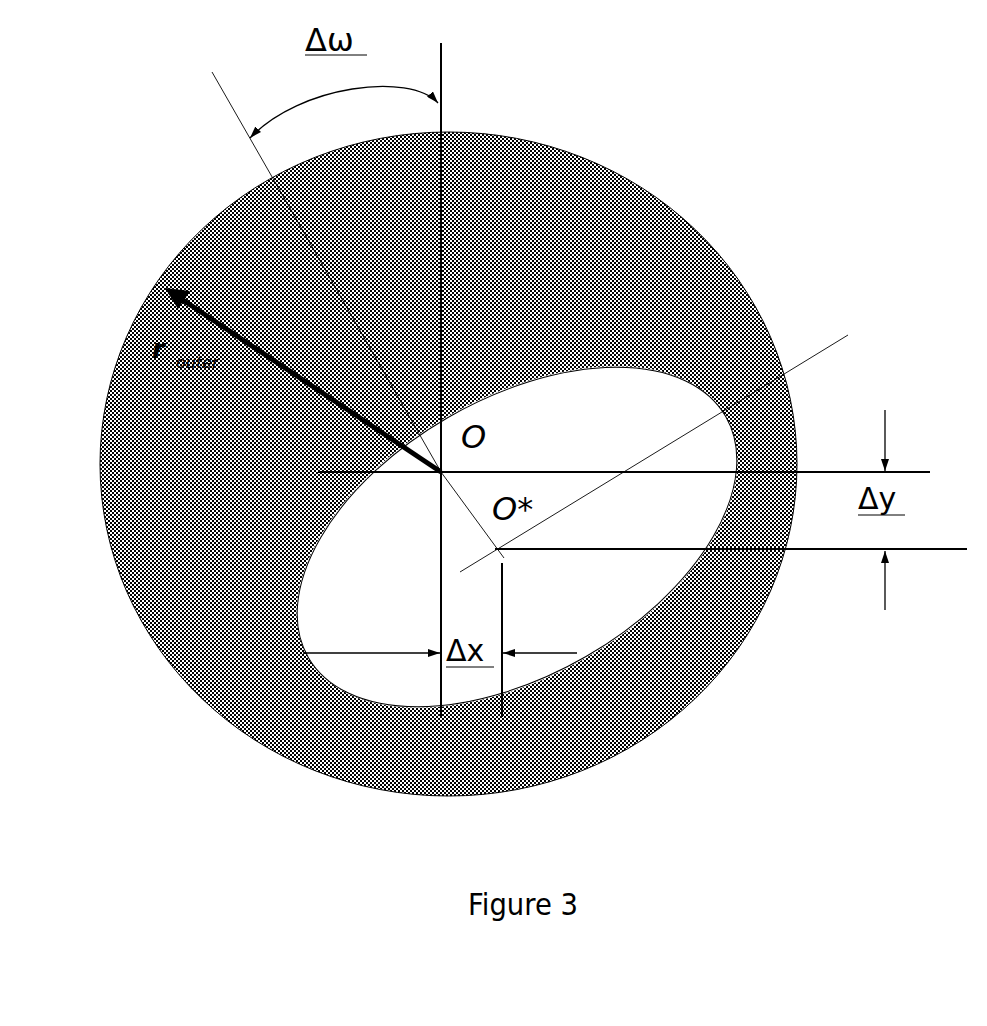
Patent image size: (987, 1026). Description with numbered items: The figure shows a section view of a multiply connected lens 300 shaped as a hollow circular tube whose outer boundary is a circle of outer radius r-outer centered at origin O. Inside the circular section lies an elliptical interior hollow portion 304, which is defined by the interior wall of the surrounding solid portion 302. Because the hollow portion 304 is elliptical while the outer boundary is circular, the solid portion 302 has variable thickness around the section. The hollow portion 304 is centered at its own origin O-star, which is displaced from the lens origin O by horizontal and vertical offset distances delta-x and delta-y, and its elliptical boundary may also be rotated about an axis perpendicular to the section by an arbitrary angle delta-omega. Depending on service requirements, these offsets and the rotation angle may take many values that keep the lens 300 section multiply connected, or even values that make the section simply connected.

The multiply connected lens 300 is at (762, 202).
The solid portion 302 is at (735, 360).
The elliptical interior hollow portion 304 is at (362, 590).